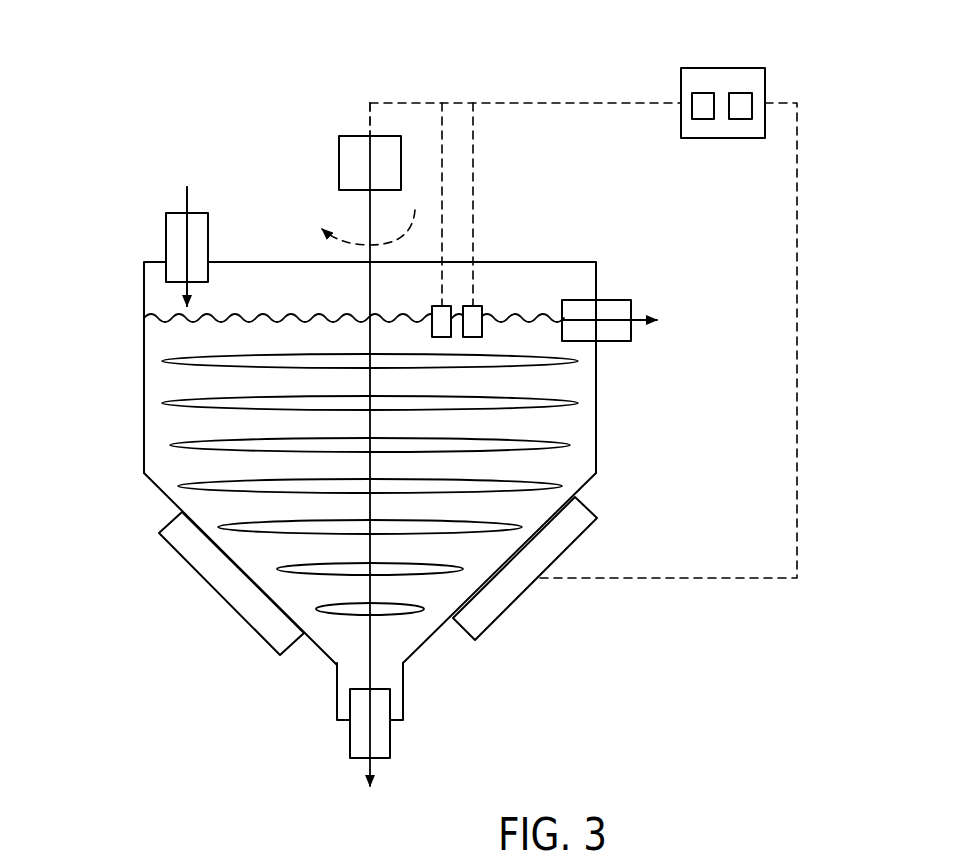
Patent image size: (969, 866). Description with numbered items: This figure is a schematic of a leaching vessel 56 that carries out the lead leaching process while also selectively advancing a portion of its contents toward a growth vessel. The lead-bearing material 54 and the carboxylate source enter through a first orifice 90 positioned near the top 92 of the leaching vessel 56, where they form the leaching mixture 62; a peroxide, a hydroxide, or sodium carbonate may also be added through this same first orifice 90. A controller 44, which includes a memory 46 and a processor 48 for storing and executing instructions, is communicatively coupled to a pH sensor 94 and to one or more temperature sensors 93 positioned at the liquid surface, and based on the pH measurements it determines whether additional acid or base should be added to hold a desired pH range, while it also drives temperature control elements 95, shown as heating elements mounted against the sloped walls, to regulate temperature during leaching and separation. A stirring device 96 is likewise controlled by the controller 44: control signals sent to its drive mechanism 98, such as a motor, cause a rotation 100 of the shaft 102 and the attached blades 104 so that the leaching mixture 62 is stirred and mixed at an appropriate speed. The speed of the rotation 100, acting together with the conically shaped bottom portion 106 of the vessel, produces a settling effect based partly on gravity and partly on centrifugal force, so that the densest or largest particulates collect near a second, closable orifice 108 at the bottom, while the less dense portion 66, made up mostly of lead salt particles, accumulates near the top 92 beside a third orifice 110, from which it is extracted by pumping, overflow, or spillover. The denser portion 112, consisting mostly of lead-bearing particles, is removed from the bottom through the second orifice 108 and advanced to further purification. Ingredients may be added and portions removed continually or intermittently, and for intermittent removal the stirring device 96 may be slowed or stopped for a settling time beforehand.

The controller 44 is at (722, 68).
The memory 46 is at (703, 119).
The processor 48 is at (740, 119).
The lead-bearing material 54 is at (185, 197).
The leaching vessel 56 is at (302, 81).
The leaching mixture 62 is at (281, 338).
The less dense portion of the leaching mixture 66 is at (607, 322).
The first orifice 90 is at (166, 228).
The top of the leaching vessel 92 is at (116, 293).
The temperature sensor 93 is at (472, 306).
The pH sensor 94 is at (441, 306).
The temperature control element 95 is at (220, 597).
The stirring device 96 is at (346, 105).
The drive mechanism 98 is at (339, 165).
The rotation 100 is at (412, 215).
The shaft 102 is at (365, 312).
The blades 104 is at (188, 412).
The conically shaped bottom portion 106 is at (437, 659).
The second orifice 108 is at (350, 740).
The third orifice 110 is at (613, 300).
The denser portion of the leaching mixture 112 is at (360, 676).